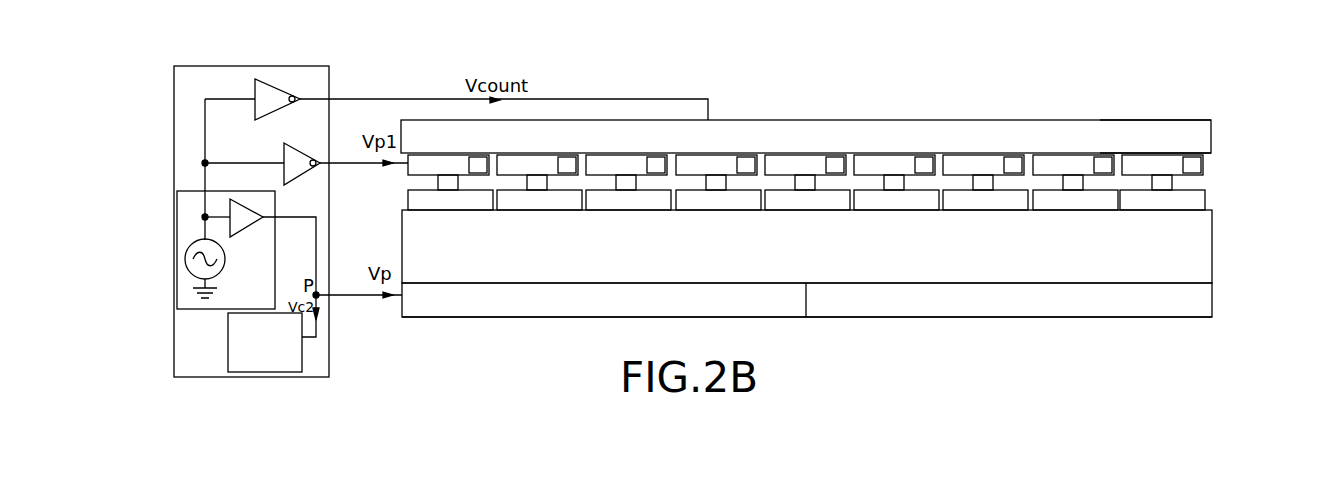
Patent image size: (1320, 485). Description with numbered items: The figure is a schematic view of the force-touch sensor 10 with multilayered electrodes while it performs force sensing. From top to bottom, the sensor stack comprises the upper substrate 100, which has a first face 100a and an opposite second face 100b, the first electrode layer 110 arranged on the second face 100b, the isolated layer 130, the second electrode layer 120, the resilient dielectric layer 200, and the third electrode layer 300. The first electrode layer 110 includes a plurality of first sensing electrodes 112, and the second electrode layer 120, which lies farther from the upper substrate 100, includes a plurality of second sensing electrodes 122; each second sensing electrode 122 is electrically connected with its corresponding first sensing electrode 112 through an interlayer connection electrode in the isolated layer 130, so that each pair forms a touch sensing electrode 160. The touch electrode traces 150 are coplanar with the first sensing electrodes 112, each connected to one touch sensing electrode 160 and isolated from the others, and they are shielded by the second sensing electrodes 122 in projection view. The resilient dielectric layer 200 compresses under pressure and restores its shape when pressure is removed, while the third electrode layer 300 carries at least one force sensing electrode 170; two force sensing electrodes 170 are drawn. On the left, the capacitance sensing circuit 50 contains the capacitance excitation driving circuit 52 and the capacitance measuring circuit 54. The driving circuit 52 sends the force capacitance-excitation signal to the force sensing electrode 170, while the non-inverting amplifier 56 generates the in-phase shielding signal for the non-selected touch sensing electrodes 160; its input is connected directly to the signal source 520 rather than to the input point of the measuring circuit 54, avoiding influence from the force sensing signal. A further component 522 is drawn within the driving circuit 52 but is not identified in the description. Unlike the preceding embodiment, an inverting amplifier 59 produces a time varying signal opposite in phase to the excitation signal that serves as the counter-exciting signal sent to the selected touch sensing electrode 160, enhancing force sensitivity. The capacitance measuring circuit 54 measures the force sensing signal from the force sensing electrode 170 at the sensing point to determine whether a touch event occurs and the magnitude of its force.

The force-touch sensor 10 is at (852, 56).
The capacitance sensing circuit 50 is at (253, 66).
The capacitance excitation driving circuit 52 is at (177, 250).
The signal source 520 is at (193, 243).
The amplifier 522 is at (252, 228).
The capacitance measuring circuit 54 is at (228, 337).
The non-inverting amplifier 56 is at (300, 175).
The inverting amplifier 59 is at (278, 112).
The upper substrate 100 is at (1207, 137).
The first face 100a is at (1197, 120).
The second face 100b is at (1125, 157).
The first electrode layer 110 is at (1172, 142).
The first sensing electrodes 112 is at (818, 167).
The second electrode layer 120 is at (1216, 198).
The second sensing electrodes 122 is at (827, 194).
The isolated layer 130 is at (1118, 182).
The touch electrode traces 150 is at (1203, 168).
The touch sensing electrodes 160 is at (740, 194).
The force sensing electrode 170 is at (637, 312).
The resilient dielectric layer 200 is at (1206, 248).
The third electrode layer 300 is at (1206, 302).